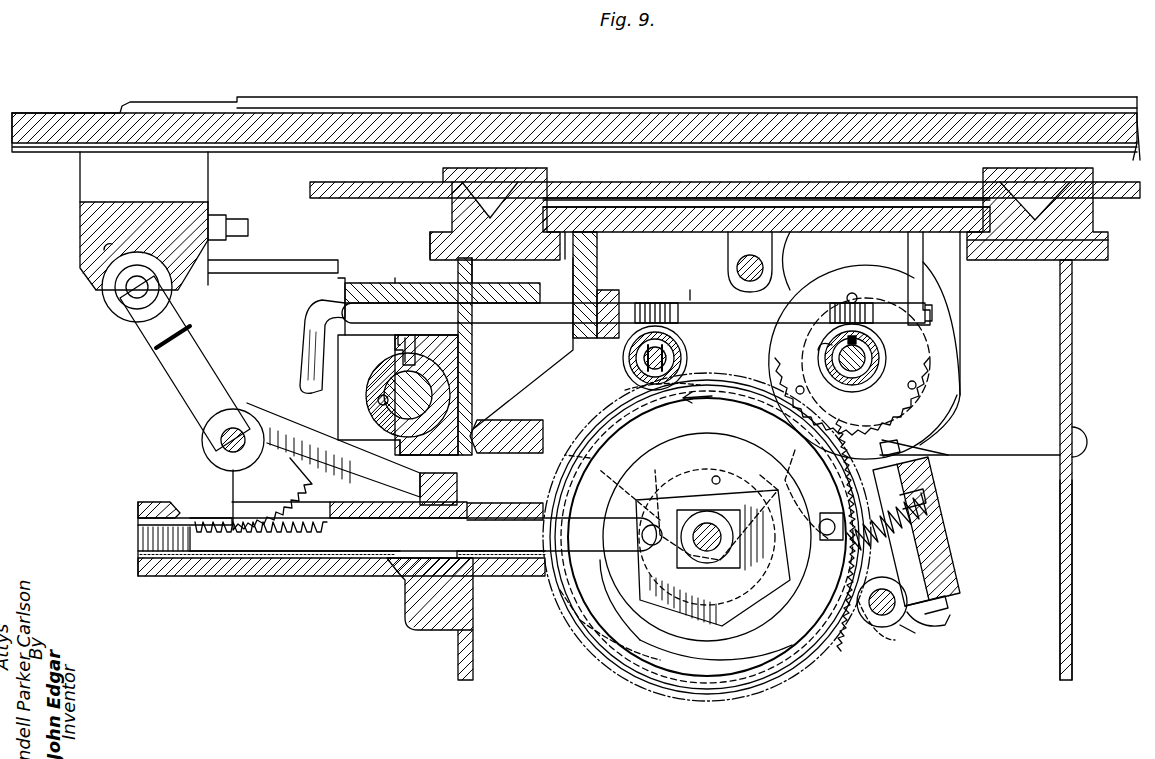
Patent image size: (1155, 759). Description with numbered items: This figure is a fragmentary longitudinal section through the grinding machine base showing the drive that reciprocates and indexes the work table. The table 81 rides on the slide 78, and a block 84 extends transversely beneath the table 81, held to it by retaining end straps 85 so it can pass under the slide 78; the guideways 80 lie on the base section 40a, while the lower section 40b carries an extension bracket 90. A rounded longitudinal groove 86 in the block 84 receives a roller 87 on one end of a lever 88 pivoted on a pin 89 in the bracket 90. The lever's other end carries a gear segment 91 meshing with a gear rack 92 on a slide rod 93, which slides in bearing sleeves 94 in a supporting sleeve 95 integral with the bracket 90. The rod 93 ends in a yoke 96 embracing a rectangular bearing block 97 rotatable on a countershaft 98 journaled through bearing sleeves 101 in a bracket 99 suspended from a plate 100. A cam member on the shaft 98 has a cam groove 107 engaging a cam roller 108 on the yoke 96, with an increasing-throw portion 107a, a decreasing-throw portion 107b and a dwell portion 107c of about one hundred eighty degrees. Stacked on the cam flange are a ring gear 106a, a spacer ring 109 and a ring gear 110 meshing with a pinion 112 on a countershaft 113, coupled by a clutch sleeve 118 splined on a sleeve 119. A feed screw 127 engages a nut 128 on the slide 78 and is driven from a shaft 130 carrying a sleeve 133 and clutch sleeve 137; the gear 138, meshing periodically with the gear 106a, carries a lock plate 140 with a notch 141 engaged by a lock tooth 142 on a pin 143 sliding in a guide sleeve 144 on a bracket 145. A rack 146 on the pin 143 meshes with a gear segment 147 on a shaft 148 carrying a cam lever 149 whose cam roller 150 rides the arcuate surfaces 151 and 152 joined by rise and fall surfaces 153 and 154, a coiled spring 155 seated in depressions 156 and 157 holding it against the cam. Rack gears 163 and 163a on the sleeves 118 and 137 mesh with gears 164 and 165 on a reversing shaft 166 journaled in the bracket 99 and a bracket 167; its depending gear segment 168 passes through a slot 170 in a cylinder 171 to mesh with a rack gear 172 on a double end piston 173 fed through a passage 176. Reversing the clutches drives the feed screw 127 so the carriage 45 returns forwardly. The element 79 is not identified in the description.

The carriage 45 is at (841, 90).
The table 81 is at (448, 100).
The retaining end straps 85 is at (93, 172).
The block 84 is at (87, 217).
The longitudinal groove 86 is at (104, 253).
The roller 87 is at (112, 302).
The lever 88 is at (162, 333).
The pin 89 is at (220, 440).
The extension bracket 90 is at (272, 418).
The gear segment 91 is at (243, 485).
The gear rack 92 is at (330, 534).
The slide rod 93 is at (400, 585).
The bearing sleeves 94 is at (515, 578).
The supporting sleeve 95 is at (232, 578).
The yoke 96 is at (645, 566).
The rectangular bearing block 97 is at (745, 592).
The countershaft 98 is at (712, 590).
The bearing sleeves 101 is at (716, 525).
The cam groove 107 is at (762, 675).
The increasing-throw portion 107a is at (800, 645).
The decreasing-throw portion 107b is at (652, 660).
The dwell portion 107c is at (716, 476).
The cam roller 108 is at (626, 492).
The spacer ring 109 is at (645, 390).
The ring gear 110 is at (622, 392).
The pinion 112 is at (630, 372).
The countershaft 113 is at (640, 362).
The clutch sleeve 118 is at (628, 350).
The sleeve 119 is at (680, 340).
The feed screw 127 is at (755, 260).
The nut 128 is at (795, 258).
The shaft 130 is at (868, 358).
The sleeve 133 is at (860, 374).
The clutch sleeve 137 is at (830, 364).
The gear 138 is at (918, 372).
The annular lock plate 140 is at (940, 388).
The notch 141 is at (940, 430).
The lock tooth 142 is at (950, 448).
The pin 143 is at (948, 602).
The guide sleeve 144 is at (935, 555).
The bracket 145 is at (938, 460).
The longitudinal gear rack 146 is at (948, 620).
The gear segment 147 is at (920, 630).
The shaft 148 is at (898, 614).
The cam lever 149 is at (838, 541).
The cam roller 150 is at (850, 500).
The arcuate surface 151 is at (750, 441).
The arcuate surface 152 is at (718, 696).
The rise surface 153 is at (819, 527).
The fall surface 154 is at (586, 590).
The coiled spring 155 is at (932, 520).
The depression 156 is at (928, 500).
The depression 157 is at (878, 618).
The rack gear 163 is at (688, 352).
The rack gear 163a is at (830, 345).
The gear 164 is at (643, 300).
The gear 165 is at (856, 294).
The reversing shaft 166 is at (553, 296).
The bracket 167 is at (470, 360).
The depending gear segment 168 is at (393, 345).
The milled slot 170 is at (395, 370).
The cylinder 171 is at (418, 433).
The rack gear 172 is at (470, 382).
The double end piston 173 is at (398, 405).
The passage 176 is at (378, 402).
The slide 78 is at (722, 186).
The rail block 79 is at (1032, 212).
The guideways 80 is at (1010, 248).
The bracket 99 is at (962, 292).
The plate 100 is at (860, 207).
The base section 40a is at (1054, 470).
The lower section of the base 40b is at (1046, 580).
The ring gear 106a is at (846, 395).